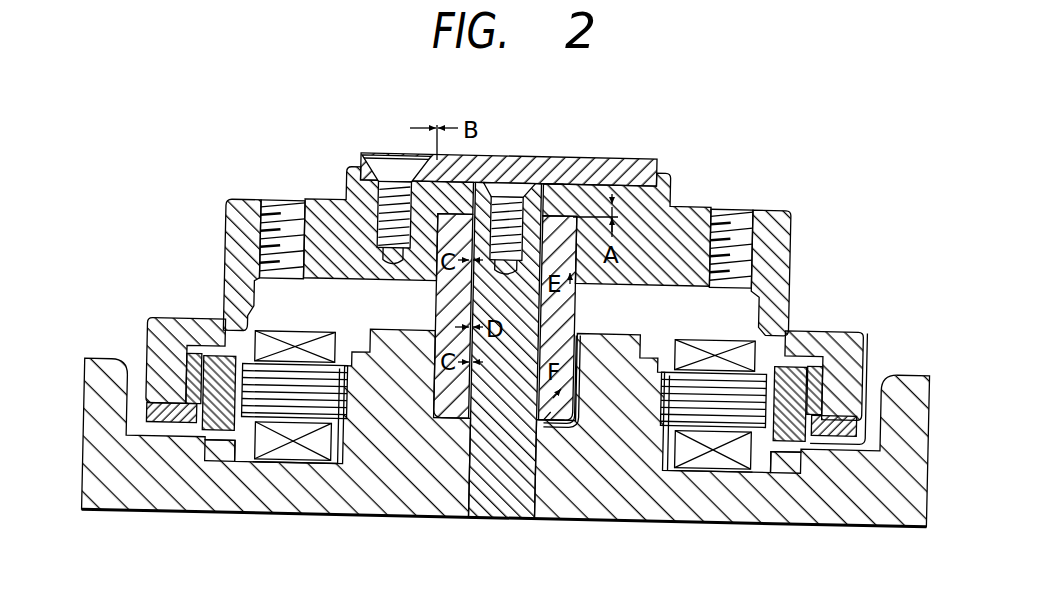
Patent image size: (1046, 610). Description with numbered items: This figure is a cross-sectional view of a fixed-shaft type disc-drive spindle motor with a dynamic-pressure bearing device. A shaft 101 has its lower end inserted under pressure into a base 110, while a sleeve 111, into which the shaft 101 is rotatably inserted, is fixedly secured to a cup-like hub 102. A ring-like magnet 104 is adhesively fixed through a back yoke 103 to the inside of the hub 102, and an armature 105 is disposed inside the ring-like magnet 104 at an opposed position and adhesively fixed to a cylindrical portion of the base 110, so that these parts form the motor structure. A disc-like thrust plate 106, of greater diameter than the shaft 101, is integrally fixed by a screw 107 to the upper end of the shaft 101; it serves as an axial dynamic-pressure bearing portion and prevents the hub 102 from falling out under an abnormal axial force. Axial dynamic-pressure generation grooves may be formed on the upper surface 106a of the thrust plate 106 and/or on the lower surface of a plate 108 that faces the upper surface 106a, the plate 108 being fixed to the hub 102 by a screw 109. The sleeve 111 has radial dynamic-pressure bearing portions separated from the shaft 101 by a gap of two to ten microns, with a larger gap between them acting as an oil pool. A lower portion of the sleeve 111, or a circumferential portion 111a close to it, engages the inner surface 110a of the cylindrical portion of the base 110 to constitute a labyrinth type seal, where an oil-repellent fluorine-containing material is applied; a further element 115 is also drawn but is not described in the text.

The shaft 101 is at (494, 505).
The cup-like hub 102 is at (772, 230).
The back yoke 103 is at (867, 382).
The ring-like magnet 104 is at (818, 330).
The armature 105 is at (703, 467).
The thrust plate 106 is at (575, 170).
The upper surface of the thrust plate 106a is at (545, 172).
The screw 107 is at (513, 185).
The plate 108 is at (625, 210).
The screw 109 is at (376, 156).
The base 110 is at (887, 512).
The inner surface of cylindrical portion of the base 110a is at (582, 428).
The sleeve 111 is at (450, 415).
The circumferential portion 111a is at (578, 425).
The seal bracket 115 is at (221, 455).